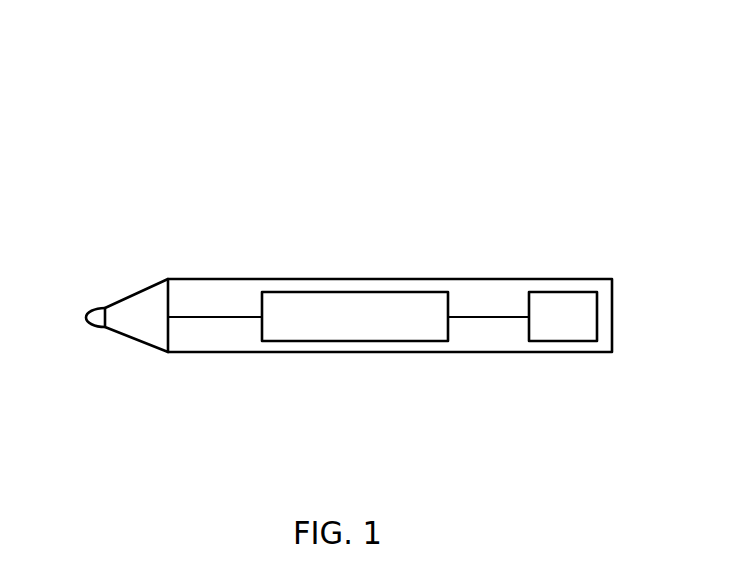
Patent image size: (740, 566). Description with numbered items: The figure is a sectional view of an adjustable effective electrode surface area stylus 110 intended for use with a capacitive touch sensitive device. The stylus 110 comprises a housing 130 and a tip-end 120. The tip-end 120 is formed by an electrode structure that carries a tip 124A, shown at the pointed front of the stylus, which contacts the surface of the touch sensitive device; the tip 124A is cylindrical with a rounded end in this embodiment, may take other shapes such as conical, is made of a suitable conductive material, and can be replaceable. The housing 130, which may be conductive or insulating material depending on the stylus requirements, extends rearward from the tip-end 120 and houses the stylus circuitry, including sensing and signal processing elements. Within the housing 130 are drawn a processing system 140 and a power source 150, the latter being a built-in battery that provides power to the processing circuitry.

The stylus 110 is at (235, 122).
The tip-end 120 is at (86, 373).
The tip 124A is at (91, 312).
The housing 130 is at (597, 279).
The processing system 140 is at (427, 292).
The power source 150 is at (537, 292).